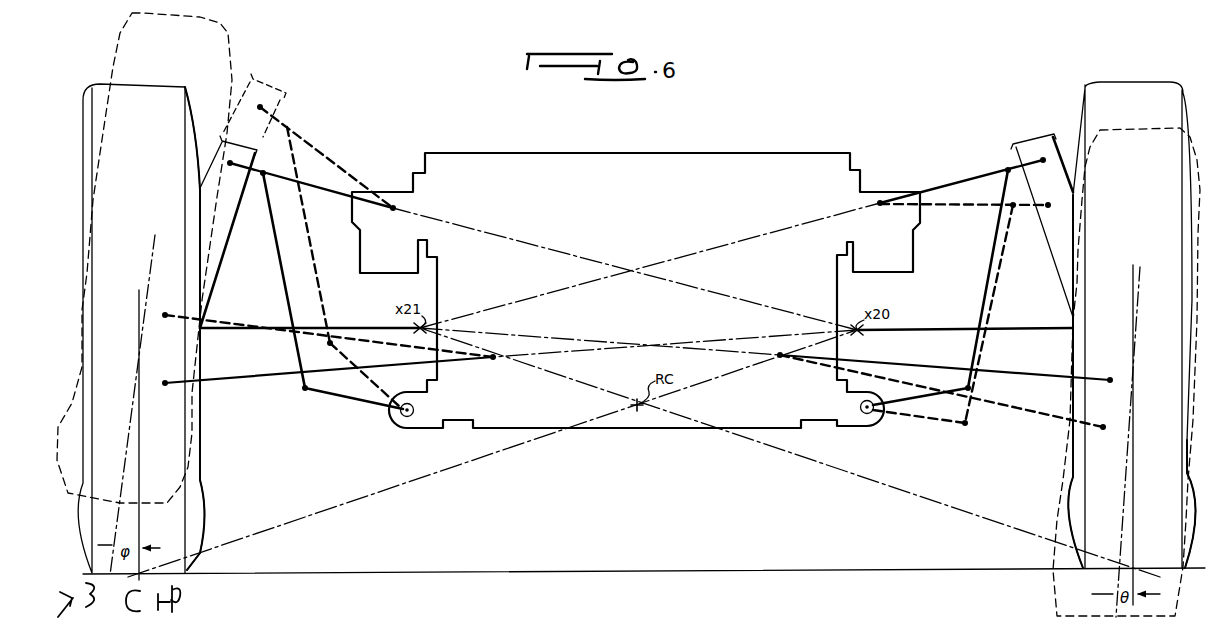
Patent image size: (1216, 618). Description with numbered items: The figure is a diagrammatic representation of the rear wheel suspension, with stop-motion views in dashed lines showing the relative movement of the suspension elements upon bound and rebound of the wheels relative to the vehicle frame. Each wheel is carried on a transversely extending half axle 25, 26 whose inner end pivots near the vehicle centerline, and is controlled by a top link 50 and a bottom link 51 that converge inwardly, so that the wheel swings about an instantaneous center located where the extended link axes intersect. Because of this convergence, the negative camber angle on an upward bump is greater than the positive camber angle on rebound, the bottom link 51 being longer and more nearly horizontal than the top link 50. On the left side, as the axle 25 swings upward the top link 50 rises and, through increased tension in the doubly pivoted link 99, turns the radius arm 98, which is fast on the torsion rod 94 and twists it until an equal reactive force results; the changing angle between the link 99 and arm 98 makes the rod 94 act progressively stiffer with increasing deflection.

The half axle 25 is at (221, 329).
The half axle 26 is at (1025, 330).
The top link 50 is at (331, 182).
The bottom link 51 is at (449, 348).
The torsion rod 94 is at (400, 425).
The radius arm 98 is at (345, 396).
The link 99 is at (308, 268).